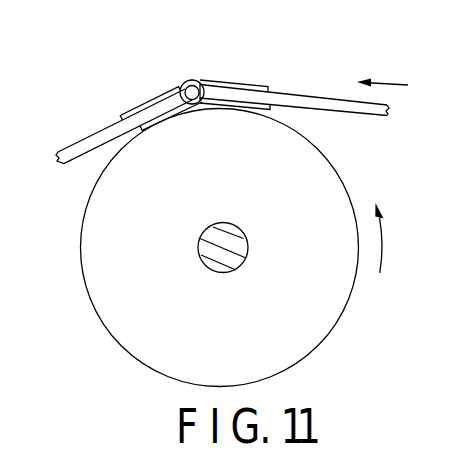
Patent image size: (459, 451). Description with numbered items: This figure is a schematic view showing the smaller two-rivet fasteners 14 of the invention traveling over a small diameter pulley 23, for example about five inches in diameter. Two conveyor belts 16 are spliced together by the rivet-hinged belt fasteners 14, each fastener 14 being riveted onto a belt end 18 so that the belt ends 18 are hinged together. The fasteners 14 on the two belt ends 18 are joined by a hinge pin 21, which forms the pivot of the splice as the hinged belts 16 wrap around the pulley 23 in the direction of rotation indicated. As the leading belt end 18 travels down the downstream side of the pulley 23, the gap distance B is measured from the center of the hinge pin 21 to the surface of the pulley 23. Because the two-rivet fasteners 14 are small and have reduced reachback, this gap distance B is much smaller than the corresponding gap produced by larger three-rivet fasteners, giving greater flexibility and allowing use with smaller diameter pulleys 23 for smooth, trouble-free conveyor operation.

The rivet-hinged belt fastener 14 is at (140, 100).
The conveyor belt 16 is at (77, 153).
The belt end 18 is at (173, 98).
The hinge pin 21 is at (193, 85).
The pulley 23 is at (232, 248).
The gap distance B is at (199, 119).